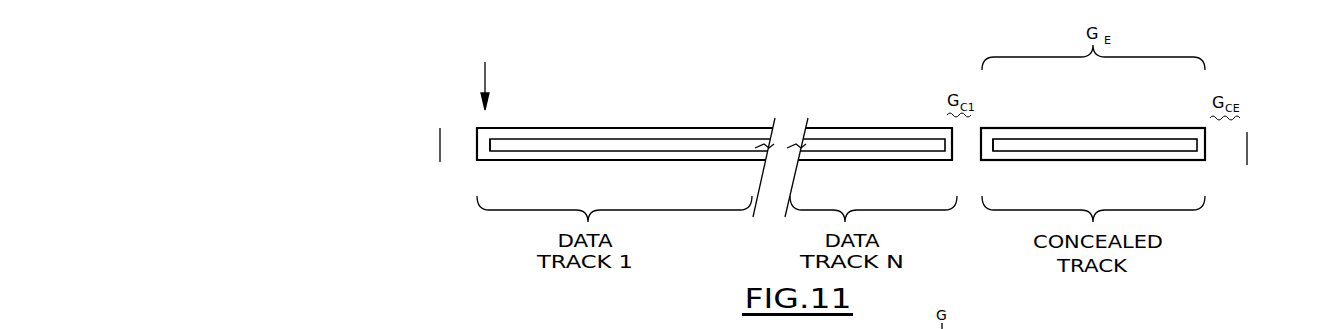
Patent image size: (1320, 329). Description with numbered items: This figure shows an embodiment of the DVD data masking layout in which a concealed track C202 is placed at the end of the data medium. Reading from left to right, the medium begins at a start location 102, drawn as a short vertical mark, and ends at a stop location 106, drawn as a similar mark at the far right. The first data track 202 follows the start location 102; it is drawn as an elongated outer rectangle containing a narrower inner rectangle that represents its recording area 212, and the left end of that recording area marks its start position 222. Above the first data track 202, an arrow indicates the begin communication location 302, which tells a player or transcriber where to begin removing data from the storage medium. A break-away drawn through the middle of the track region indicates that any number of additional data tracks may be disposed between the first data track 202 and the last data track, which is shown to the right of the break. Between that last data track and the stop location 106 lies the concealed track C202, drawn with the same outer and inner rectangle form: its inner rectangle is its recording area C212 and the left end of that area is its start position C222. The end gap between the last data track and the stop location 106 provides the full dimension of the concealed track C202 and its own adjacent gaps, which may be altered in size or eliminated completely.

The begin communication location 302 is at (487, 72).
The data track 202 is at (503, 135).
The recording area 212 is at (522, 146).
The start position 222 is at (493, 145).
The start location 102 is at (438, 145).
The stop location 106 is at (1249, 147).
The concealed track C202 is at (823, 135).
The recording area C212 is at (843, 150).
The start position C222 is at (995, 147).